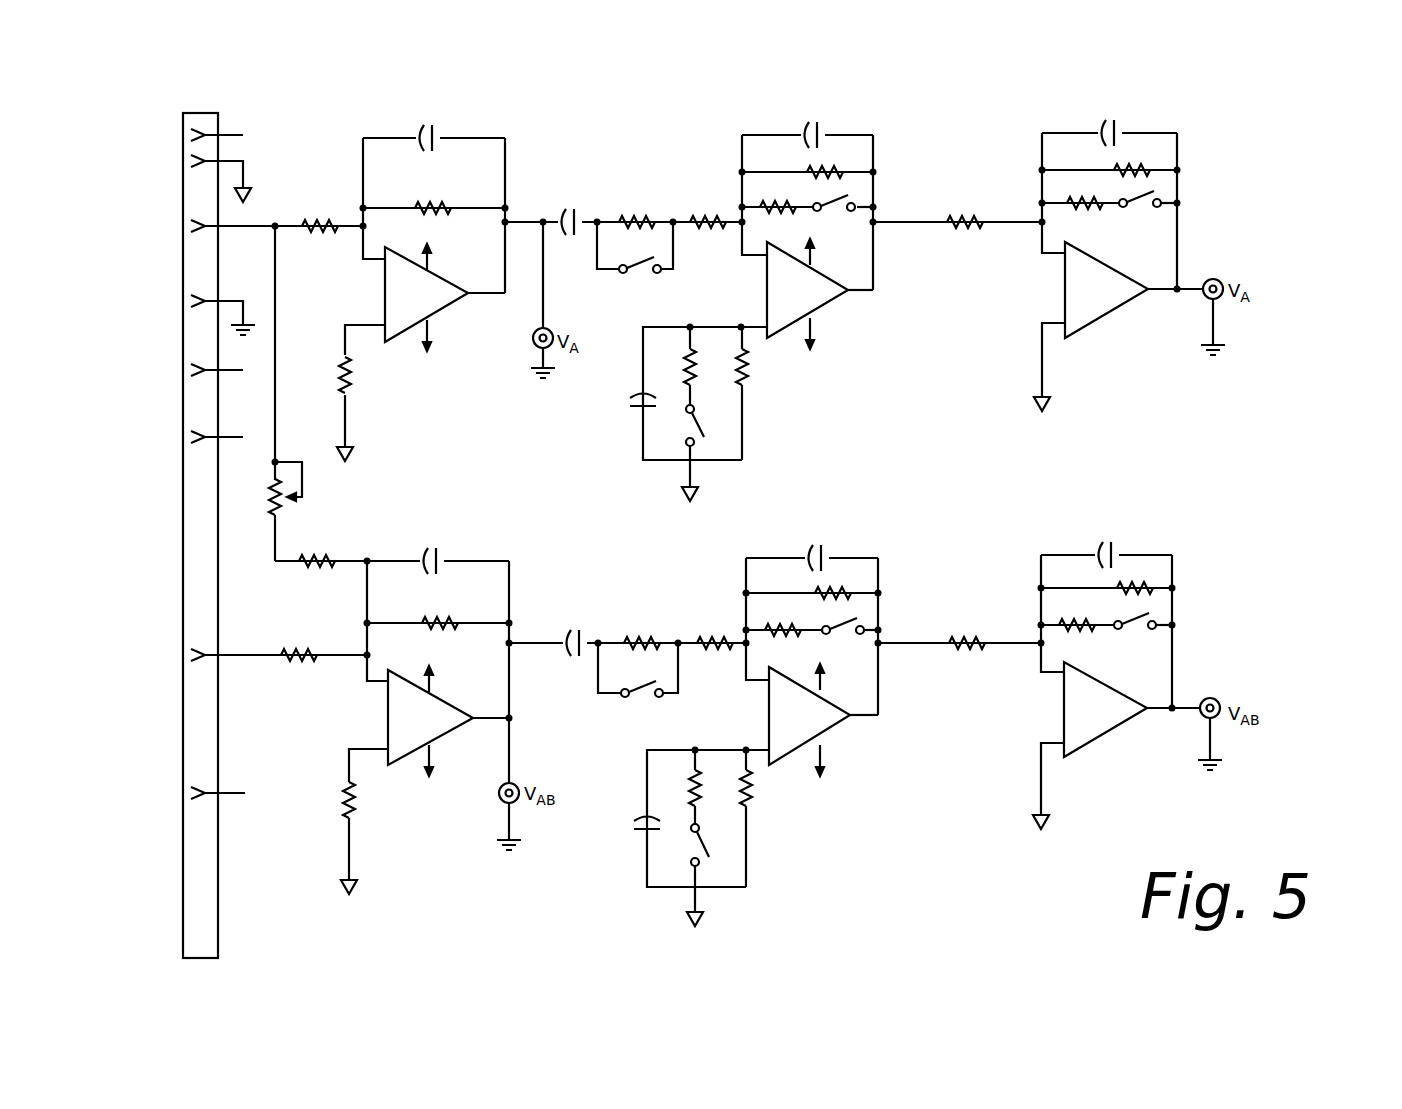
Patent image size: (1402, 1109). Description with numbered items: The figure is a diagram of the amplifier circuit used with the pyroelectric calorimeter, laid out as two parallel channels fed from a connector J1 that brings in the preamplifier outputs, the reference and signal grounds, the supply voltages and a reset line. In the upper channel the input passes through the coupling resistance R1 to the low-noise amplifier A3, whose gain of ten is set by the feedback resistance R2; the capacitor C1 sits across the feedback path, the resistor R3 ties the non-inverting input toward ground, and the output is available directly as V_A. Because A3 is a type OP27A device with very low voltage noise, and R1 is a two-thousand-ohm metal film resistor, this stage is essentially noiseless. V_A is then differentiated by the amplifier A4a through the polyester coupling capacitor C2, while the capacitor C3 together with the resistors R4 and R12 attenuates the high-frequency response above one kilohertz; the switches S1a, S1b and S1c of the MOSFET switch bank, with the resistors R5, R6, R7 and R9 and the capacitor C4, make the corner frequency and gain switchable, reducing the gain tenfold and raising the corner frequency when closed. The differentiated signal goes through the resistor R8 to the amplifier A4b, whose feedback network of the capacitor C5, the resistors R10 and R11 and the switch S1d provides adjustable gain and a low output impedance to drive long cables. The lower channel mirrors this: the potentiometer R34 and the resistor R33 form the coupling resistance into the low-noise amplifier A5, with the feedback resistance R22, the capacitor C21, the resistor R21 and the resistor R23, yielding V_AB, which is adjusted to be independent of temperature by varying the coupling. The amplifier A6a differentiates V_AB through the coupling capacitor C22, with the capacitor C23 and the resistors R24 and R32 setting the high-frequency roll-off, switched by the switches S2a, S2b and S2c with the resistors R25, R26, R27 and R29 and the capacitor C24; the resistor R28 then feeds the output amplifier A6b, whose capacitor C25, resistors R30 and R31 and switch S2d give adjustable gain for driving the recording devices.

The connector J1 is at (214, 520).
The coupling resistance R1 is at (320, 212).
The feedback resistance R2 is at (434, 194).
The resistor R3 is at (356, 409).
The capacitor C1 is at (429, 120).
The coupling capacitor C2 is at (567, 207).
The low-noise amplifier A3 is at (445, 308).
The resistor R4 is at (669, 205).
The resistor R12 is at (708, 205).
The MOSFET switch S1a is at (635, 263).
The capacitor C3 is at (813, 117).
The resistor R6 is at (807, 160).
The resistor R7 is at (777, 195).
The MOSFET switch S1c is at (843, 219).
The differentiating amplifier A4a is at (820, 305).
The capacitor C4 is at (629, 405).
The resistor R5 is at (702, 366).
The MOSFET switch S1b is at (709, 432).
The resistor R9 is at (754, 393).
The resistor R8 is at (957, 207).
The capacitor C5 is at (1105, 116).
The resistor R10 is at (1109, 158).
The resistor R11 is at (1080, 218).
The MOSFET switch S1d is at (1148, 215).
The output amplifier A4b is at (1134, 290).
The coupling potentiometer R34 is at (302, 511).
The coupling resistance R33 is at (321, 548).
The resistor R21 is at (299, 640).
The capacitor C21 is at (431, 543).
The feedback resistance R22 is at (438, 609).
The low-noise amplifier A5 is at (448, 733).
The resistor R23 is at (364, 838).
The coupling capacitor C22 is at (573, 628).
The resistor R24 is at (672, 626).
The resistor R32 is at (715, 626).
The MOSFET switch S2a is at (638, 685).
The capacitor C23 is at (815, 540).
The resistor R26 is at (812, 581).
The resistor R27 is at (784, 617).
The MOSFET switch S2c is at (850, 642).
The differentiating amplifier A6a is at (823, 731).
The capacitor C24 is at (630, 827).
The resistor R25 is at (678, 787).
The MOSFET switch S2b is at (715, 855).
The resistor R29 is at (763, 818).
The resistor R28 is at (959, 628).
The capacitor C25 is at (1107, 538).
The resistor R30 is at (1106, 576).
The resistor R31 is at (1077, 612).
The MOSFET switch S2d is at (1143, 637).
The output amplifier A6b is at (1132, 709).